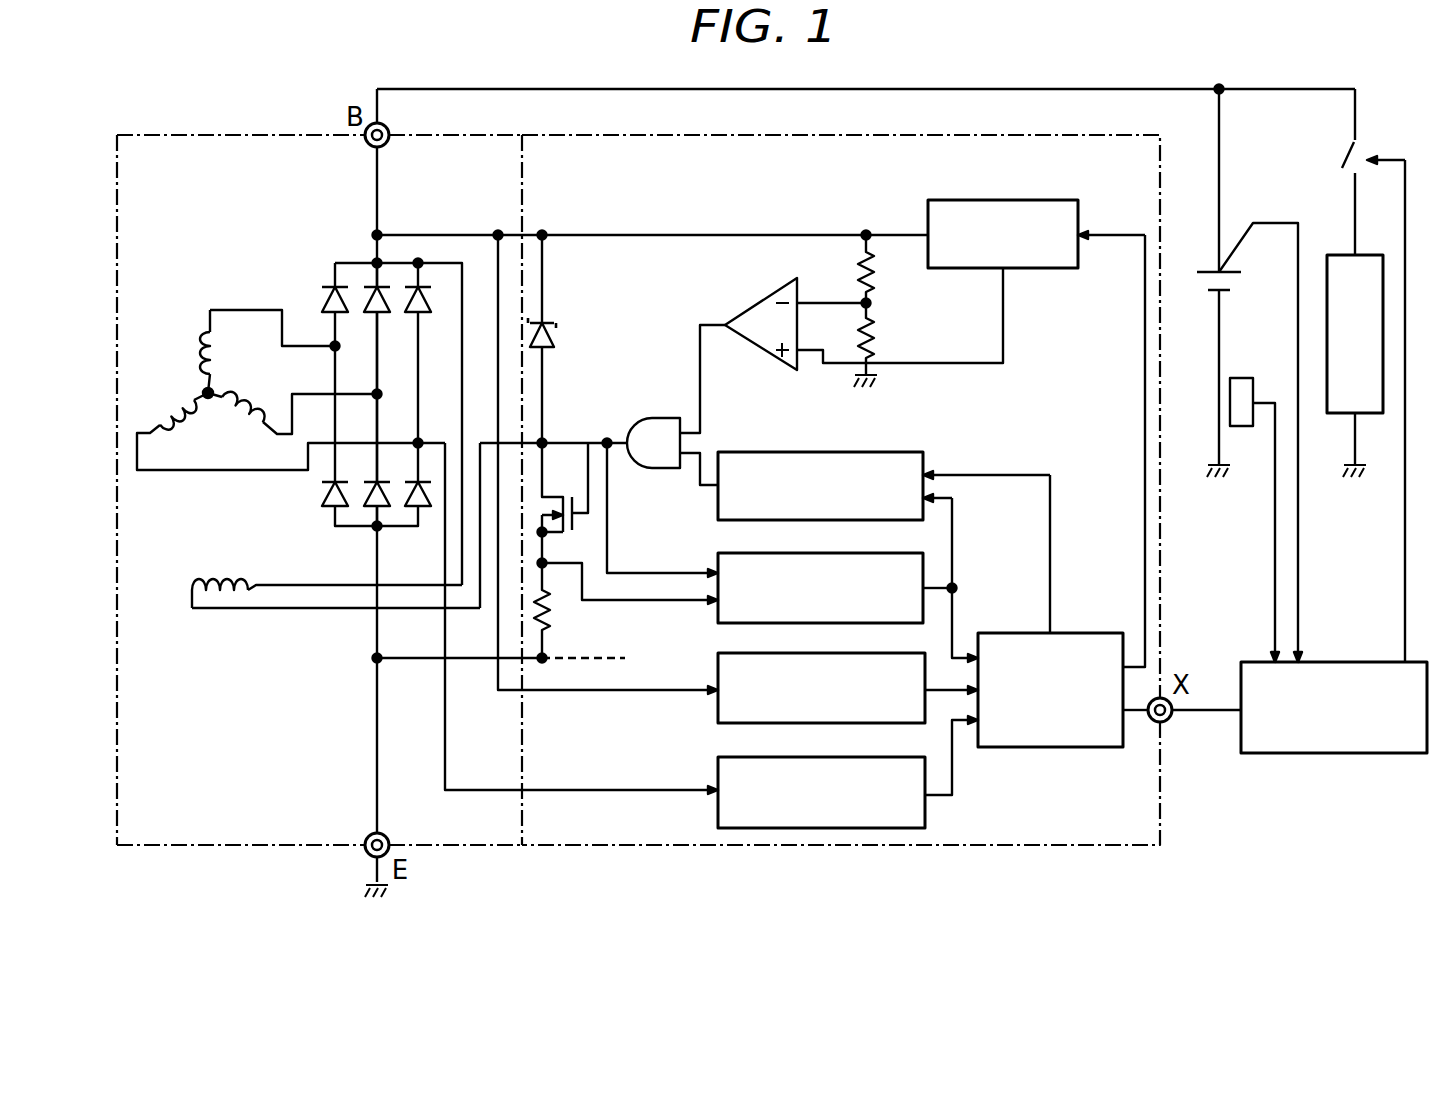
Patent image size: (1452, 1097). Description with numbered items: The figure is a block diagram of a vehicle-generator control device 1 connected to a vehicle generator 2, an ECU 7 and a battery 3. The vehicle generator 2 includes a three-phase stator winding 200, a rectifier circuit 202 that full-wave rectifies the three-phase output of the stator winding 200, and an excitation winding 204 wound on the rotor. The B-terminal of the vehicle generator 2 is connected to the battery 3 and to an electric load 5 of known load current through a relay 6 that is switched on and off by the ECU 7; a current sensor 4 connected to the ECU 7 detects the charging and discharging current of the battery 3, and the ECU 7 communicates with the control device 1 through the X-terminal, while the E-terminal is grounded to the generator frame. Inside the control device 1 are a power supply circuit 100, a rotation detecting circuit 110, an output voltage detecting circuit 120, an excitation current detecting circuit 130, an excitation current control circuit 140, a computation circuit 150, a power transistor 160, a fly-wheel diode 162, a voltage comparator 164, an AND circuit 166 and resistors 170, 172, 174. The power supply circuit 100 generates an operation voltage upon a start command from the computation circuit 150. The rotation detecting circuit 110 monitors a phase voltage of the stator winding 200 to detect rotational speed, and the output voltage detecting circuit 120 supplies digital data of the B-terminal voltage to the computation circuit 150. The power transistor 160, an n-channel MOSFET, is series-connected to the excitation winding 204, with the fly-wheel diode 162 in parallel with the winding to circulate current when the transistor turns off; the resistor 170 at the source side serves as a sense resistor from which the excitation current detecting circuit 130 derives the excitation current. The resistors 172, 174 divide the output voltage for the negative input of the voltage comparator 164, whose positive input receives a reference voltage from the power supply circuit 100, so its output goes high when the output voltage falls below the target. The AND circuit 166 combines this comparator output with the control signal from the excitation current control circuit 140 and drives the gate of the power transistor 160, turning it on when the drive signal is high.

The vehicle-generator control device 1 is at (1125, 135).
The vehicle generator 2 is at (160, 134).
The battery 3 is at (1212, 271).
The current sensor 4 is at (1242, 378).
The electric load 5 is at (1341, 255).
The relay 6 is at (1368, 151).
The ECU 7 is at (1250, 662).
The power supply circuit 100 is at (1020, 200).
The rotation detecting circuit 110 is at (716, 770).
The output voltage detecting circuit 120 is at (716, 668).
The excitation current detecting circuit 130 is at (725, 553).
The excitation current control circuit 140 is at (810, 452).
The computation circuit 150 is at (1088, 633).
The power transistor 160 is at (558, 494).
The fly-wheel diode 162 is at (548, 322).
The voltage comparator 164 is at (760, 302).
The AND circuit 166 is at (655, 418).
The resistor 170 is at (553, 617).
The resistor 172 is at (880, 283).
The resistor 174 is at (880, 338).
The stator winding 200 is at (205, 390).
The rectifier circuit 202 is at (352, 263).
The excitation winding 204 is at (226, 574).